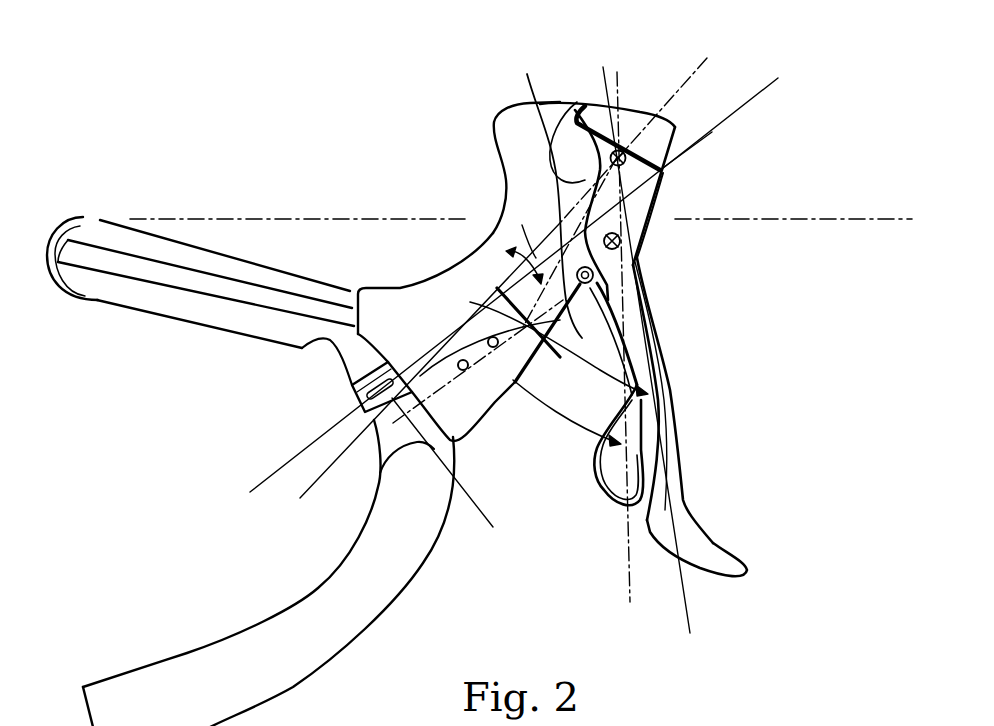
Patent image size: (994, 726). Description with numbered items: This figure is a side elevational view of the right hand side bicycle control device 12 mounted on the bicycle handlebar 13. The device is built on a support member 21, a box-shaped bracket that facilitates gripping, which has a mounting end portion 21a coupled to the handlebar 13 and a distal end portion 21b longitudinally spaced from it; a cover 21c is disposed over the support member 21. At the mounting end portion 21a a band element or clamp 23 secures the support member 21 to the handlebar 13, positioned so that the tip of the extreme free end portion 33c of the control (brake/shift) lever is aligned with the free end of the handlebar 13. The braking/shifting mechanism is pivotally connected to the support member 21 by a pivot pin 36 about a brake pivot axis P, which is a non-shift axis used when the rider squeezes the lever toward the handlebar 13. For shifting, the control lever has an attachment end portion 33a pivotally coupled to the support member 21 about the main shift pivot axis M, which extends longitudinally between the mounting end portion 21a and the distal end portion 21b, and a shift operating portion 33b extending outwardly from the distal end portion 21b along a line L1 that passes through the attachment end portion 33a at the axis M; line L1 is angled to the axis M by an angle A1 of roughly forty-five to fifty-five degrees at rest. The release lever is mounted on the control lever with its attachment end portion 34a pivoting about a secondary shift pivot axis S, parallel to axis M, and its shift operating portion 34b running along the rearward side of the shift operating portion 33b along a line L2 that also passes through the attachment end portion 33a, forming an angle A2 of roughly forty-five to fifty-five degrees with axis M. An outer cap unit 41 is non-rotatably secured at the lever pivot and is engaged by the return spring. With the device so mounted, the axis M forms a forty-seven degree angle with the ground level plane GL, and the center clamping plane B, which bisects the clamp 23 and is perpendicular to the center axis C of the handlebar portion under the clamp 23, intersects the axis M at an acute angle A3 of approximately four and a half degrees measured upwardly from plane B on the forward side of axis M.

The control device 12 is at (498, 109).
The bicycle handlebar 13 is at (318, 578).
The support member 21 is at (450, 268).
The mounting end portion 21a is at (352, 338).
The distal end portion 21b is at (544, 189).
The cover 21c is at (510, 157).
The clamp 23 is at (352, 397).
The attachment end portion 33a is at (660, 183).
The shift operating portion 33b is at (684, 487).
The extreme free end portion 33c is at (748, 570).
The attachment end portion 34a is at (604, 313).
The shift operating portion 34b is at (613, 463).
The pivot pin 36 is at (593, 276).
The outer cap unit 41 is at (637, 110).
The ground level plane GL is at (232, 220).
The main shift pivot axis M is at (710, 58).
The center clamping plane B is at (775, 82).
The secondary shift pivot axis S is at (700, 155).
The center axis C is at (378, 481).
The brake pivot axis P is at (584, 288).
The line L1 is at (690, 632).
The line L2 is at (628, 598).
The angle A1 is at (562, 362).
The angle A2 is at (557, 418).
The acute angle A3 is at (524, 241).